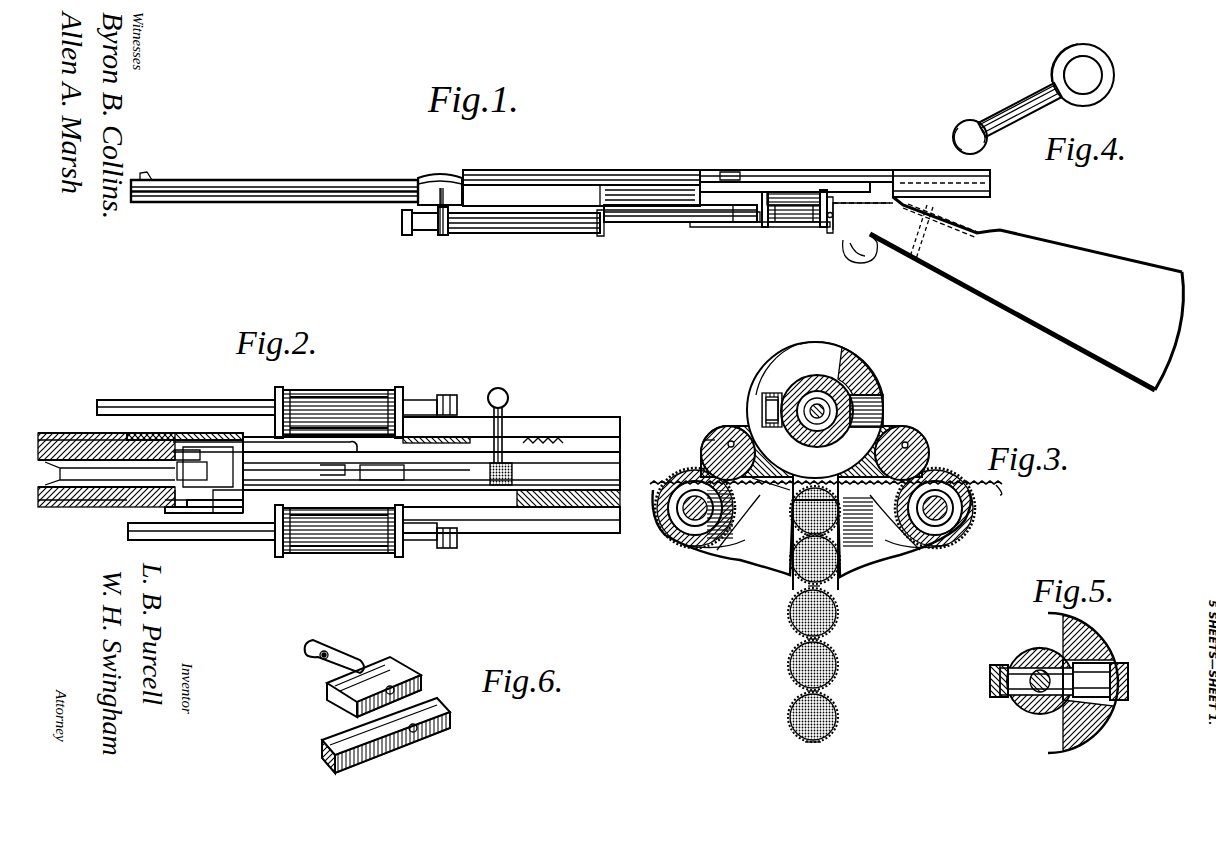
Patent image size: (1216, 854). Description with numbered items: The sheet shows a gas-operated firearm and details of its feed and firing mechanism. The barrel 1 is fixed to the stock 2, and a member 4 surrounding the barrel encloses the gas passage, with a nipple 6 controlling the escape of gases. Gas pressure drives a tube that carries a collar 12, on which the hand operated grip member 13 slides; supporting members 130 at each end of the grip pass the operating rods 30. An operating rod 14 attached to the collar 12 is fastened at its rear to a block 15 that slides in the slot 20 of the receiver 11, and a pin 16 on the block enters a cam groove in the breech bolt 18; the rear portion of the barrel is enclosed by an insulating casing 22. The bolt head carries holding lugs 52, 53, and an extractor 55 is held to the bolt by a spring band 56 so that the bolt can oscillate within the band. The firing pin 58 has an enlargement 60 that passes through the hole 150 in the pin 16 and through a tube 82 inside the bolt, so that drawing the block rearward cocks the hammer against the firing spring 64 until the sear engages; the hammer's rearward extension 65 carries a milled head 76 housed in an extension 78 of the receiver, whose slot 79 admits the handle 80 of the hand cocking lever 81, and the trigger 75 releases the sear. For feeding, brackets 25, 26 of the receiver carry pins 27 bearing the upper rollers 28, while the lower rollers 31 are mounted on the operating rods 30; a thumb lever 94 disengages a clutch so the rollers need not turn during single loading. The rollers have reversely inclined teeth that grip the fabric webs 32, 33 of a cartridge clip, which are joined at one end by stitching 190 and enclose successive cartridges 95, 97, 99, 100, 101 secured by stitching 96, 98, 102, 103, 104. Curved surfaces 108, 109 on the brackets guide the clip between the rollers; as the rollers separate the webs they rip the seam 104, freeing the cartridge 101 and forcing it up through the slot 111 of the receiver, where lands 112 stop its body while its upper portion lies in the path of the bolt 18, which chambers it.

In FIG. 1, the barrel 1 is at (295, 188).
In FIG. 2, the barrel 1 is at (94, 488).
In FIG. 1, the stock 2 is at (1065, 268).
In FIG. 2, the stock 2 is at (583, 518).
In FIG. 1, the member surrounding the barrel 4 is at (444, 176).
In FIG. 1, the nipple 6 is at (408, 236).
In FIG. 1, the receiver 11 is at (860, 172).
In FIG. 2, the receiver 11 is at (173, 508).
In FIG. 3, the receiver 11 is at (857, 377).
In FIG. 5, the receiver 11 is at (1083, 648).
In FIG. 1, the collar 12 is at (613, 228).
In FIG. 1, the hand operated grip member 13 is at (485, 233).
In FIG. 1, the operating rod 14 is at (637, 186).
In FIG. 2, the operating rod 14 is at (208, 508).
In FIG. 5, the operating rod 14 is at (1129, 668).
In FIG. 6, the operating rod 14 is at (397, 742).
In FIG. 1, the block 15 is at (737, 167).
In FIG. 2, the block 15 is at (230, 498).
In FIG. 5, the block 15 is at (1108, 704).
In FIG. 6, the block 15 is at (395, 664).
In FIG. 2, the pin 16 is at (335, 556).
In FIG. 5, the pin 16 is at (1063, 703).
In FIG. 6, the pin 16 is at (345, 650).
In FIG. 2, the breech bolt 18 is at (213, 455).
In FIG. 3, the breech bolt 18 is at (805, 405).
In FIG. 5, the breech bolt 18 is at (1016, 668).
In FIG. 1, the slot of the receiver 20 is at (790, 190).
In FIG. 2, the slot of the receiver 20 is at (457, 500).
In FIG. 3, the slot of the receiver 20 is at (878, 412).
In FIG. 5, the slot of the receiver 20 is at (1100, 667).
In FIG. 1, the casing 22 is at (545, 176).
In FIG. 2, the casing 22 is at (70, 433).
In FIG. 1, the bracket 25 is at (762, 228).
In FIG. 2, the bracket 25 is at (275, 392).
In FIG. 1, the bracket 26 is at (823, 230).
In FIG. 2, the bracket 26 is at (398, 557).
In FIG. 3, the bracket 26 is at (720, 437).
In FIG. 3, the pins 27 is at (920, 457).
In FIG. 1, the upper rollers 28 is at (800, 207).
In FIG. 2, the upper rollers 28 is at (320, 528).
In FIG. 3, the upper rollers 28 is at (907, 448).
In FIG. 1, the operating rods 30 is at (677, 214).
In FIG. 2, the operating rods 30 is at (425, 541).
In FIG. 3, the operating rods 30 is at (977, 525).
In FIG. 1, the lower rollers 31 is at (800, 222).
In FIG. 2, the lower rollers 31 is at (357, 553).
In FIG. 3, the lower rollers 31 is at (958, 543).
In FIG. 3, the web of cartridge clip 32 is at (680, 484).
In FIG. 3, the web of cartridge clip 33 is at (995, 490).
In FIG. 2, the holding lug 52 is at (193, 466).
In FIG. 2, the holding lug 53 is at (380, 480).
In FIG. 2, the extractor 55 is at (223, 440).
In FIG. 3, the extractor 55 is at (762, 412).
In FIG. 5, the extractor 55 is at (990, 687).
In FIG. 2, the spring band 56 is at (326, 476).
In FIG. 3, the firing pin 58 is at (800, 352).
In FIG. 5, the enlargement of firing pin 60 is at (988, 673).
In FIG. 3, the firing spring 64 is at (830, 406).
In FIG. 3, the rearward extension of hammer 65 is at (835, 345).
In FIG. 1, the trigger 75 is at (866, 263).
In FIG. 2, the milled head 76 is at (504, 487).
In FIG. 1, the extension of the receiver 78 is at (975, 186).
In FIG. 2, the extension of the receiver 78 is at (595, 502).
In FIG. 1, the slot 79 is at (896, 180).
In FIG. 2, the slot 79 is at (570, 428).
In FIG. 4, the handle 80 is at (1030, 98).
In FIG. 2, the handle 80 is at (504, 430).
In FIG. 4, the hand cocking lever 81 is at (958, 123).
In FIG. 2, the hand cocking lever 81 is at (509, 393).
In FIG. 5, the tube 82 is at (1010, 697).
In FIG. 1, the thumb lever 94 is at (834, 218).
In FIG. 2, the thumb lever 94 is at (450, 540).
In FIG. 3, the cartridge 95 is at (832, 717).
In FIG. 3, the stitching 96 is at (805, 692).
In FIG. 3, the cartridge 97 is at (830, 666).
In FIG. 3, the stitching 98 is at (833, 638).
In FIG. 3, the cartridge 99 is at (792, 612).
In FIG. 3, the cartridge 100 is at (843, 558).
In FIG. 3, the cartridge 101 is at (838, 510).
In FIG. 3, the stitching 102 is at (833, 586).
In FIG. 3, the seam 103 is at (793, 540).
In FIG. 3, the seam 104 is at (797, 486).
In FIG. 3, the curved surface 108 is at (740, 525).
In FIG. 3, the curved surface 109 is at (903, 550).
In FIG. 3, the slot in the receiver 111 is at (769, 478).
In FIG. 3, the lands 112 is at (873, 413).
In FIG. 1, the supporting members 130 is at (601, 236).
In FIG. 5, the hole 150 is at (1037, 650).
In FIG. 6, the hole 150 is at (310, 655).
In FIG. 3, the stitching 190 is at (813, 743).